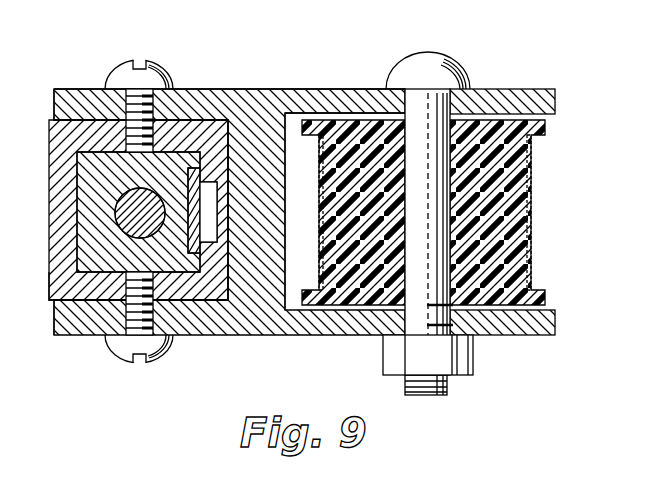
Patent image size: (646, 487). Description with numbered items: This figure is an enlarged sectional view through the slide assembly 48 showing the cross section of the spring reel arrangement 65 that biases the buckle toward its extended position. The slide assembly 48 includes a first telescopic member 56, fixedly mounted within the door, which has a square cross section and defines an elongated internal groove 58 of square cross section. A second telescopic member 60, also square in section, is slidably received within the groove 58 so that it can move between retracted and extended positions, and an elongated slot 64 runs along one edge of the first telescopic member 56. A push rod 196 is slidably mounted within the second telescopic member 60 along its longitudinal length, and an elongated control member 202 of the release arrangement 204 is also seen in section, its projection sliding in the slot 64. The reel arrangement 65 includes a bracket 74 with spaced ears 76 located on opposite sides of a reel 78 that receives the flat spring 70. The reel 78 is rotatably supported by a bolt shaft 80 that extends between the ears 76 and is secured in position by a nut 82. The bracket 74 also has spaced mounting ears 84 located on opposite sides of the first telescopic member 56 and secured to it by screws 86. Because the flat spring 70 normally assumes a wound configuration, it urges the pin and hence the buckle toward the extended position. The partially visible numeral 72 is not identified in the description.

The slide assembly 48 is at (249, 89).
The first telescopic member 56 is at (92, 293).
The internal groove 58 is at (80, 173).
The second telescopic member 60 is at (93, 252).
The elongated slot 64 is at (229, 183).
The spring reel arrangement 65 is at (438, 209).
The flat spring 70 is at (532, 193).
The arm 72 is at (7, 81).
The bracket 74 is at (309, 89).
The spaced ears 76 is at (513, 92).
The reel 78 is at (483, 128).
The bolt shaft 80 is at (404, 188).
The nut 82 is at (388, 355).
The mounting ears 84 is at (200, 88).
The screws 86 is at (160, 77).
The push rod 196 is at (128, 213).
The control member 202 is at (194, 210).
The release arrangement 204 is at (203, 230).